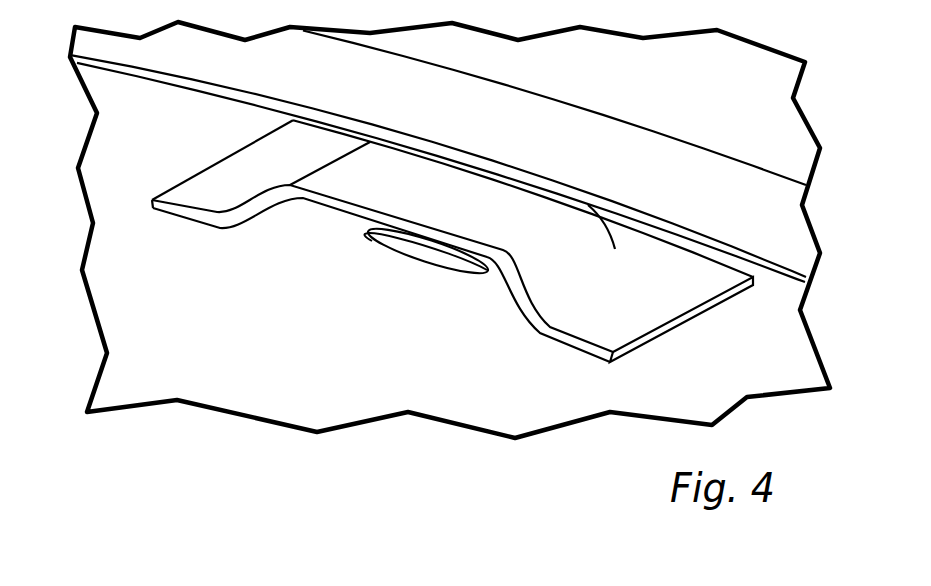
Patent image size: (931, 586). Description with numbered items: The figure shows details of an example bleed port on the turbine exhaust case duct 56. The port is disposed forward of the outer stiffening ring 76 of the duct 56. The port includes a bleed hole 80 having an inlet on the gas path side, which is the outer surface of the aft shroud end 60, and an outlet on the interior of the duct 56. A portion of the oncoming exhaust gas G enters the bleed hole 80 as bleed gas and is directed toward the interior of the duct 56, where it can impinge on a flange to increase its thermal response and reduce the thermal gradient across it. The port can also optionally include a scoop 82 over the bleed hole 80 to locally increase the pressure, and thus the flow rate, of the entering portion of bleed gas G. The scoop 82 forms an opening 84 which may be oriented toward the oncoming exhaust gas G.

The duct 56 is at (766, 130).
The outer stiffening ring 76 is at (502, 132).
The scoop 82 is at (393, 305).
The opening 84 is at (293, 240).
The bleed hole 80 is at (445, 273).
The aft shroud end 60 is at (770, 333).
The exhaust gas G is at (322, 320).